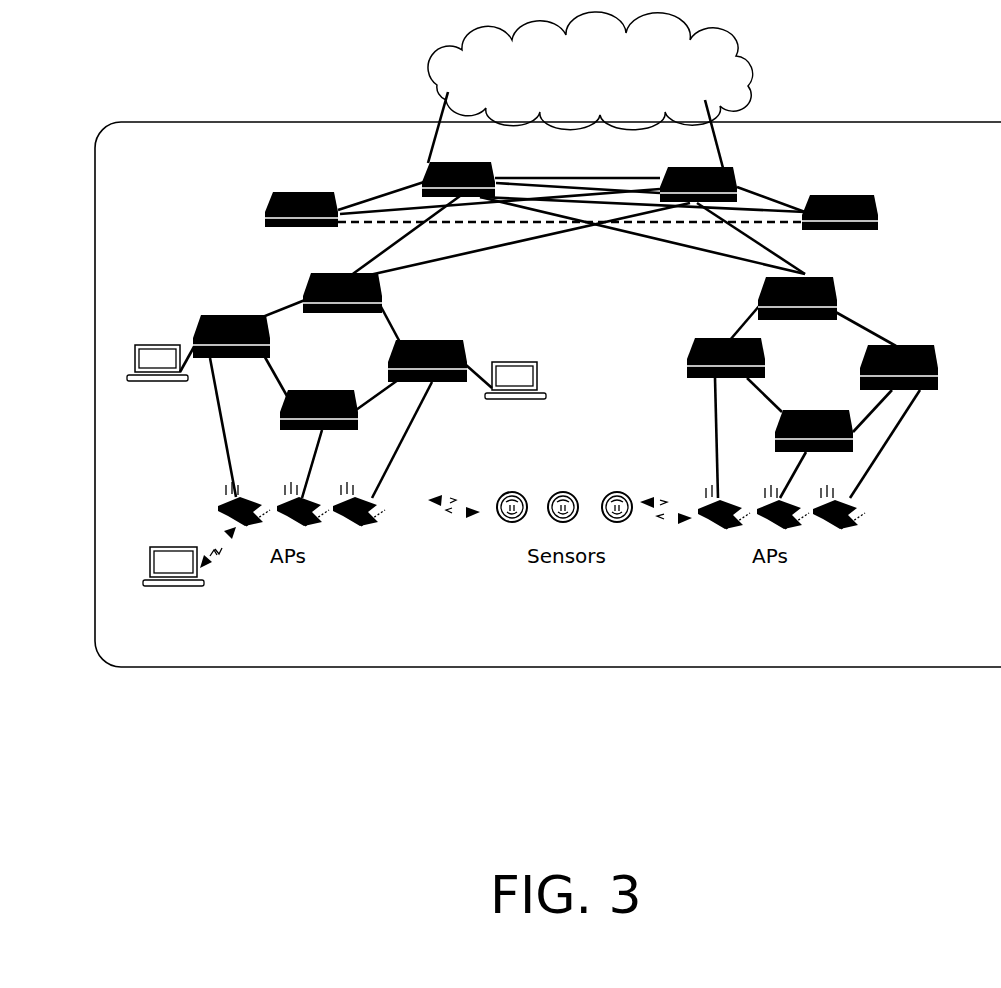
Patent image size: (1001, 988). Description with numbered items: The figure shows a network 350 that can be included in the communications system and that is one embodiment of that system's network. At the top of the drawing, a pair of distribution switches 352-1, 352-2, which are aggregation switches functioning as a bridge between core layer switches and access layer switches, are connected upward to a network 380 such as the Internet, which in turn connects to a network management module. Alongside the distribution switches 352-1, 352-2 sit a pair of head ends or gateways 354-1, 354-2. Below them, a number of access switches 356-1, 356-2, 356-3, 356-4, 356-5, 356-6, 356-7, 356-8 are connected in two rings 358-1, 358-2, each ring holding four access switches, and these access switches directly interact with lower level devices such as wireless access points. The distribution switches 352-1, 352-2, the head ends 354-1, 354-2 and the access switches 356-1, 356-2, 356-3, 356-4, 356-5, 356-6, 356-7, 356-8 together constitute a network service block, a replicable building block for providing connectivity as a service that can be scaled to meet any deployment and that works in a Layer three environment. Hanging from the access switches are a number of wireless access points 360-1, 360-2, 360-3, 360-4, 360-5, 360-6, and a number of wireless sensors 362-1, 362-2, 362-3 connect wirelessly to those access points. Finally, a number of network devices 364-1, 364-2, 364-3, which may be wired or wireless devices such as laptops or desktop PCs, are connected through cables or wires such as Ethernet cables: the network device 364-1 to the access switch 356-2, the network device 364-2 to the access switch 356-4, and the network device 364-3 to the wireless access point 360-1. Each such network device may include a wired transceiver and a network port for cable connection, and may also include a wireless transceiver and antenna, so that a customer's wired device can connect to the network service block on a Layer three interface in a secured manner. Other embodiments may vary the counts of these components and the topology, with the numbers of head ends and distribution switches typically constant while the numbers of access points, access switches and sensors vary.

The network 350 is at (627, 638).
The network 380 is at (454, 60).
The distribution switch 352-1 is at (490, 156).
The distribution switch 352-2 is at (683, 158).
The head end 354-1 is at (248, 195).
The head end 354-2 is at (893, 197).
The access switch 356-1 is at (310, 274).
The access switch 356-2 is at (204, 315).
The access switch 356-3 is at (280, 412).
The access switch 356-4 is at (490, 344).
The access switch 356-5 is at (860, 277).
The access switch 356-6 is at (687, 356).
The access switch 356-7 is at (775, 440).
The access switch 356-8 is at (938, 365).
The ring 358-1 is at (357, 370).
The ring 358-2 is at (836, 375).
The wireless AP 360-1 is at (220, 500).
The wireless AP 360-2 is at (281, 499).
The wireless AP 360-3 is at (400, 492).
The wireless AP 360-4 is at (704, 522).
The wireless AP 360-5 is at (761, 503).
The wireless AP 360-6 is at (854, 519).
The wireless sensor 362-1 is at (508, 492).
The wireless sensor 362-2 is at (564, 489).
The wireless sensor 362-3 is at (618, 492).
The network device 364-1 is at (138, 346).
The network device 364-2 is at (558, 356).
The network device 364-3 is at (148, 550).